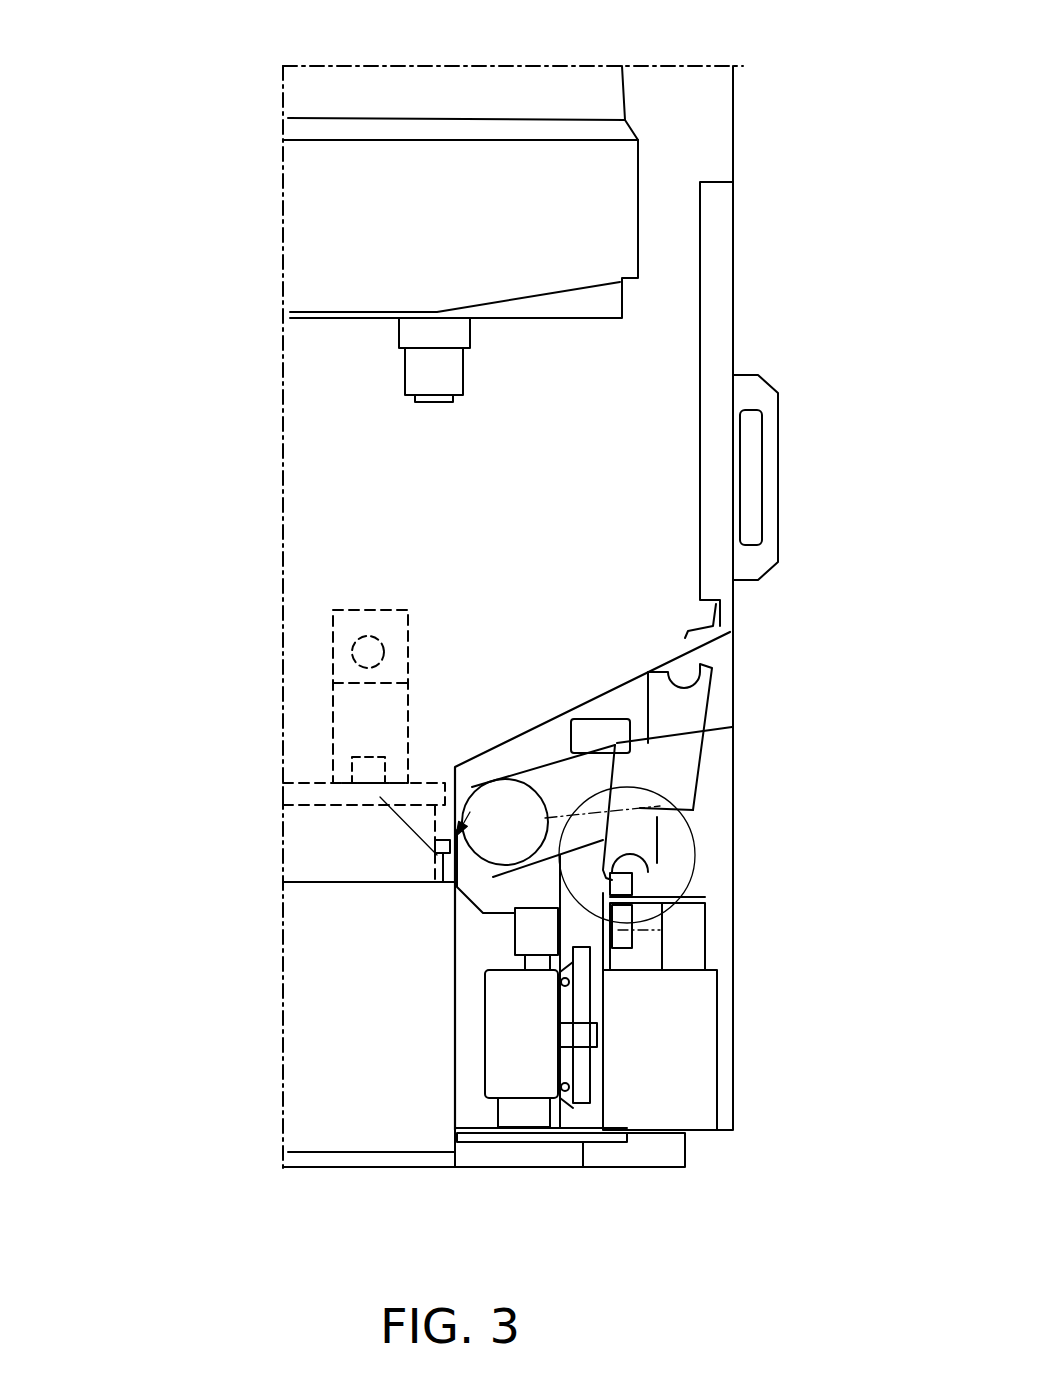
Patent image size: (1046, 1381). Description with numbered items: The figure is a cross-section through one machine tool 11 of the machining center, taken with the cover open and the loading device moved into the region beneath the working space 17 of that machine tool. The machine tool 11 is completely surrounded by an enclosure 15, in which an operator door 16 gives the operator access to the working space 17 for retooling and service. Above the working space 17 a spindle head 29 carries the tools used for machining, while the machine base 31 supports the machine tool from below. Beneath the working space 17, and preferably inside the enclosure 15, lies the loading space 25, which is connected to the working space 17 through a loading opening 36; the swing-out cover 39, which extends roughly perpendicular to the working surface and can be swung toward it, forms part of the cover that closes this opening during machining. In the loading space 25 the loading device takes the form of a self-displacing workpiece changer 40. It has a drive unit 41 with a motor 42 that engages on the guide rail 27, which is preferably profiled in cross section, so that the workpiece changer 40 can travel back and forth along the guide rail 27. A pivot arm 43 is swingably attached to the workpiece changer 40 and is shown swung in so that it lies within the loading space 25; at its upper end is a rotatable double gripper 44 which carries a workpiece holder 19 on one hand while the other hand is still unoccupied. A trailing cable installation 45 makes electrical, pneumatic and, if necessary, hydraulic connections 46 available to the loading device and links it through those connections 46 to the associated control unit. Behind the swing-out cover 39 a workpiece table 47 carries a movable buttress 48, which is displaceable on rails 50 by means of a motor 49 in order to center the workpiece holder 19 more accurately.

The machine tool 11 is at (470, 90).
The spindle head 29 is at (330, 245).
The operator door 16 is at (712, 313).
The working space 17 is at (352, 490).
The movable buttress 48 is at (372, 623).
The motor 49 is at (353, 702).
The rails 50 is at (342, 770).
The workpiece table 47 is at (310, 794).
The swing-out cover 39 is at (393, 823).
The loading opening 36 is at (418, 751).
The workpiece changer 40 is at (454, 881).
The machine base 31 is at (345, 1053).
The motor 42 is at (595, 735).
The pivot arm 43 is at (583, 786).
The double gripper 44 is at (670, 787).
The loading space 25 is at (702, 855).
The workpiece holder 19 is at (670, 870).
The connections 46 is at (690, 932).
The enclosure 15 is at (735, 992).
The trailing cable installation 45 is at (673, 1045).
The guide rail 27 is at (528, 1063).
The drive unit 41 is at (568, 1107).